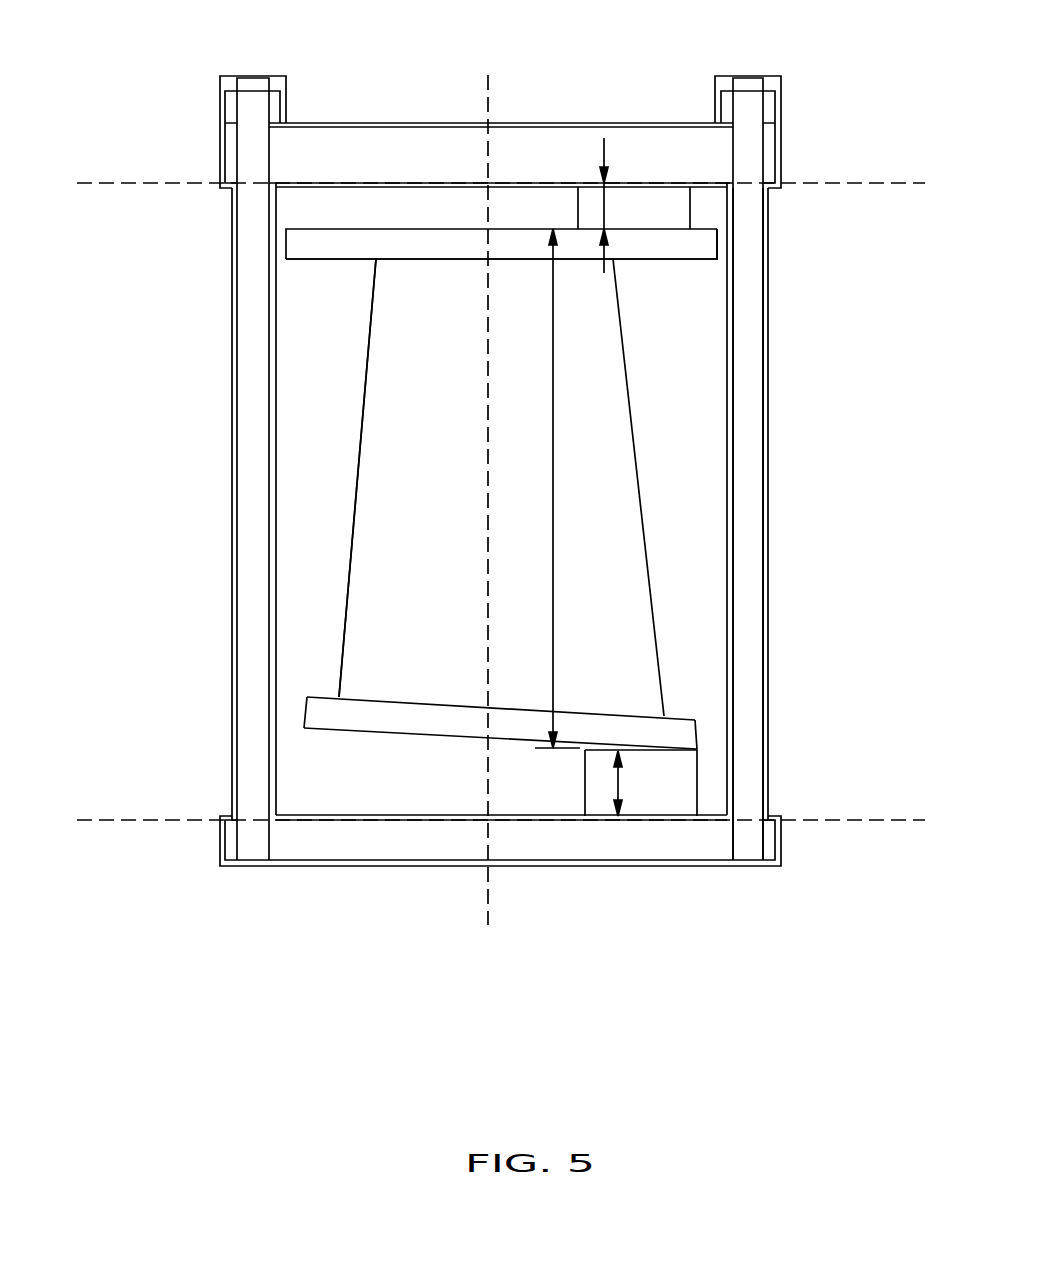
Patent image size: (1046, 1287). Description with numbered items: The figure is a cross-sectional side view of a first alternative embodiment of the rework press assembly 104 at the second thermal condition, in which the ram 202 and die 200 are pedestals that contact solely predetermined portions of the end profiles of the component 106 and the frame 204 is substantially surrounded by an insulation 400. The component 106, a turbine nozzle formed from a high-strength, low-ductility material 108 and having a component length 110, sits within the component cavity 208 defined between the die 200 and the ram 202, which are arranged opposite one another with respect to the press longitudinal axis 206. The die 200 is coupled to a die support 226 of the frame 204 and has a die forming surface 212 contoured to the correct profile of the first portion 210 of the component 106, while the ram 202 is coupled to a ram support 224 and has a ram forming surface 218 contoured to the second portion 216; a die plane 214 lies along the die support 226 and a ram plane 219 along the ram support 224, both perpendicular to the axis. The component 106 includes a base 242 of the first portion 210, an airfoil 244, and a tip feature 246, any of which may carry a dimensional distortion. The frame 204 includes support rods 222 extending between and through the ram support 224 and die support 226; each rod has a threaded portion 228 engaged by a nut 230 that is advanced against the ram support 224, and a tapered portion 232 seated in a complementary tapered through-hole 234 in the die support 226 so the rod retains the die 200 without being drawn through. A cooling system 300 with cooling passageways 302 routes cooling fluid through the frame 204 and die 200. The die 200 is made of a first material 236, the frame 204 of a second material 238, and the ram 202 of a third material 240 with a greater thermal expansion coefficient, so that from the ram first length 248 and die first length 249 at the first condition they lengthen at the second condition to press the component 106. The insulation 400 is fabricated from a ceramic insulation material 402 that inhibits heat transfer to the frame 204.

The rework press assembly 104 is at (853, 160).
The component 106 is at (362, 582).
The material 108 is at (388, 447).
The component length 110 is at (560, 508).
The die 200 is at (597, 785).
The ram 202 is at (673, 198).
The frame 204 is at (848, 363).
The press longitudinal axis 206 is at (490, 97).
The component cavity 208 is at (685, 410).
The first portion 210 is at (297, 685).
The die forming surface 212 is at (595, 748).
The die plane 214 is at (867, 820).
The second portion 216 is at (663, 302).
The ram forming surface 218 is at (640, 226).
The ram plane 219 is at (132, 181).
The support rod 222 is at (257, 93).
The ram support 224 is at (420, 150).
The die support 226 is at (342, 832).
The threaded portion 228 is at (247, 158).
The nut 230 is at (275, 110).
The tapered portion 232 is at (248, 840).
The tapered through-hole 234 is at (222, 808).
The first material 236 is at (678, 783).
The second material 238 is at (243, 643).
The third material 240 is at (667, 213).
The base 242 is at (410, 718).
The airfoil 244 is at (618, 585).
The tip feature 246 is at (356, 247).
The ram first length 248 is at (603, 203).
The die first length 249 is at (622, 783).
The cooling system 300 is at (205, 168).
The cooling passageway 302 is at (785, 205).
The insulation 400 is at (232, 480).
The insulation material 402 is at (232, 268).